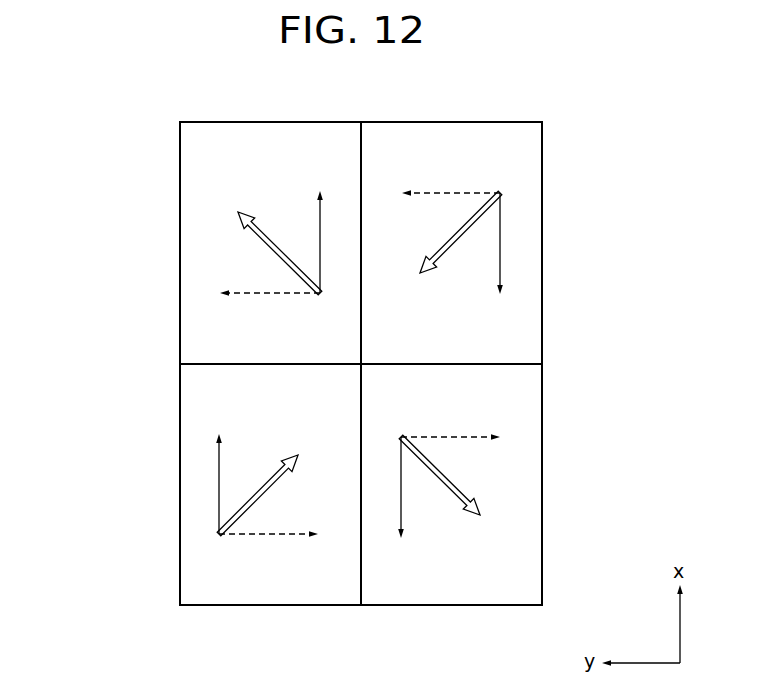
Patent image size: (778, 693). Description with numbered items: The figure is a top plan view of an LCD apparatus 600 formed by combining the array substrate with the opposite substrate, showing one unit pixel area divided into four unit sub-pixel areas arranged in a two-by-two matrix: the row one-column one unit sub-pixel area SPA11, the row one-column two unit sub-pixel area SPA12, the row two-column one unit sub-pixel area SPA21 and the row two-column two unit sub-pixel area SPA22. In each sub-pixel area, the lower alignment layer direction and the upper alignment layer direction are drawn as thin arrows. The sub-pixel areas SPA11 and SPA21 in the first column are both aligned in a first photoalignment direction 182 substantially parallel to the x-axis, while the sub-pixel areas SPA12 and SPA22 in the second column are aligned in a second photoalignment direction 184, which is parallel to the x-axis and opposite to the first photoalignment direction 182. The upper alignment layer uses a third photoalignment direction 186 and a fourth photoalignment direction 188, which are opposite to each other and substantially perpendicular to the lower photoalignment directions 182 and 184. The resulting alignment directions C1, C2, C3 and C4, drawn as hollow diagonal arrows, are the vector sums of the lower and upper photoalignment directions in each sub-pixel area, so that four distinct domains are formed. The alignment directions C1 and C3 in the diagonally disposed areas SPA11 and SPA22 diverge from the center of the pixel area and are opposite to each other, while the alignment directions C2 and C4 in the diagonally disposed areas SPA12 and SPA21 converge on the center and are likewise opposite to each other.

The LCD apparatus 600 is at (175, 266).
The row 1-column 1 unit sub-pixel area SPA11 is at (193, 158).
The row 1-column 2 unit sub-pixel area SPA12 is at (530, 160).
The row 2-column 1 unit sub-pixel area SPA21 is at (193, 405).
The row 2-column 2 unit sub-pixel area SPA22 is at (528, 386).
The first photoalignment direction 182 is at (320, 218).
The second photoalignment direction 184 is at (500, 262).
The third photoalignment direction 186 is at (455, 193).
The fourth photoalignment direction 188 is at (250, 538).
The alignment direction C1 is at (240, 212).
The alignment direction C2 is at (480, 225).
The alignment direction C3 is at (450, 485).
The alignment direction C4 is at (258, 496).